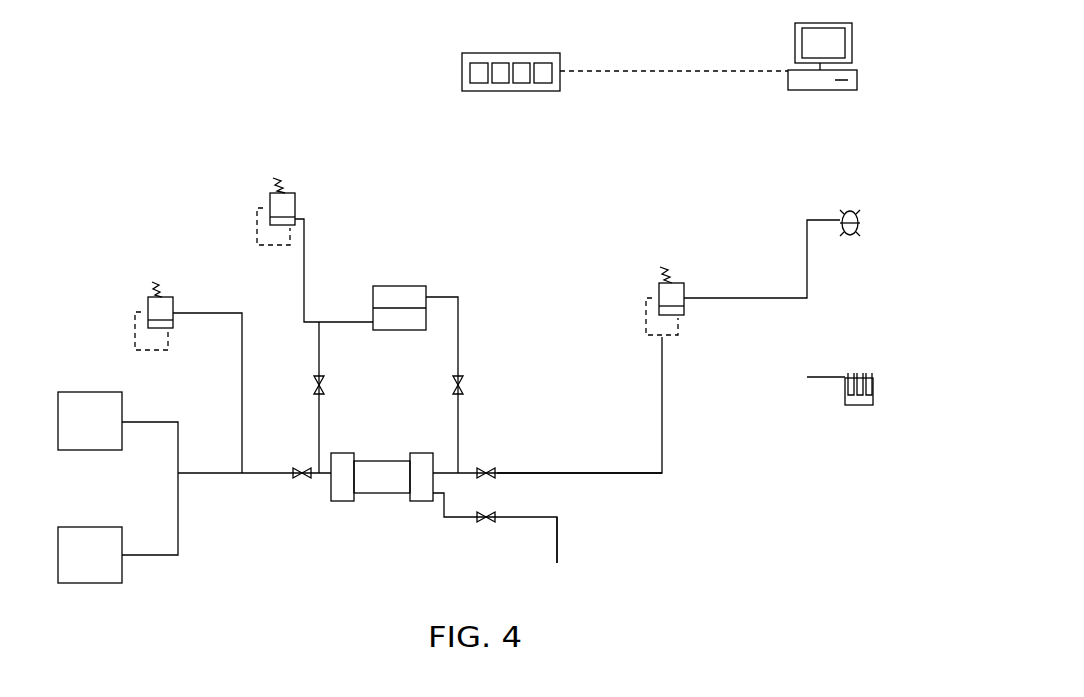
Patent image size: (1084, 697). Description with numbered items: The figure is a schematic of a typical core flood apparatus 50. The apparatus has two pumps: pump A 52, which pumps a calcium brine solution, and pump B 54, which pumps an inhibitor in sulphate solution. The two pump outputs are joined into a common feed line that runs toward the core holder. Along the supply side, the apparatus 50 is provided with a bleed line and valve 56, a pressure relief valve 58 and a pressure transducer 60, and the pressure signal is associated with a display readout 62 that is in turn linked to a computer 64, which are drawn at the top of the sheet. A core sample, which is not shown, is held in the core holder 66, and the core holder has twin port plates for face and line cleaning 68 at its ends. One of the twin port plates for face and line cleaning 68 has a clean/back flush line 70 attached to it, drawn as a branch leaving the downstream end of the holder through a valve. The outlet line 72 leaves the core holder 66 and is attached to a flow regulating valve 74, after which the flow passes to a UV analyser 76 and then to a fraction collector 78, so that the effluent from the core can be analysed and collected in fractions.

The core flood apparatus 50 is at (706, 528).
The pump A 52 is at (90, 422).
The pump B 54 is at (90, 555).
The bleed line and valve 56 is at (157, 307).
The pressure relief valve 58 is at (278, 203).
The pressure transducer 60 is at (417, 285).
The display readout 62 is at (470, 65).
The computer 64 is at (833, 43).
The core holder 66 is at (382, 477).
The twin port plates for face and line cleaning 68 is at (420, 477).
The clean/back flush line 70 is at (558, 547).
The outlet line 72 is at (558, 473).
The flow regulating valve 74 is at (665, 292).
The UV analyser 76 is at (852, 216).
The fraction collector 78 is at (873, 390).